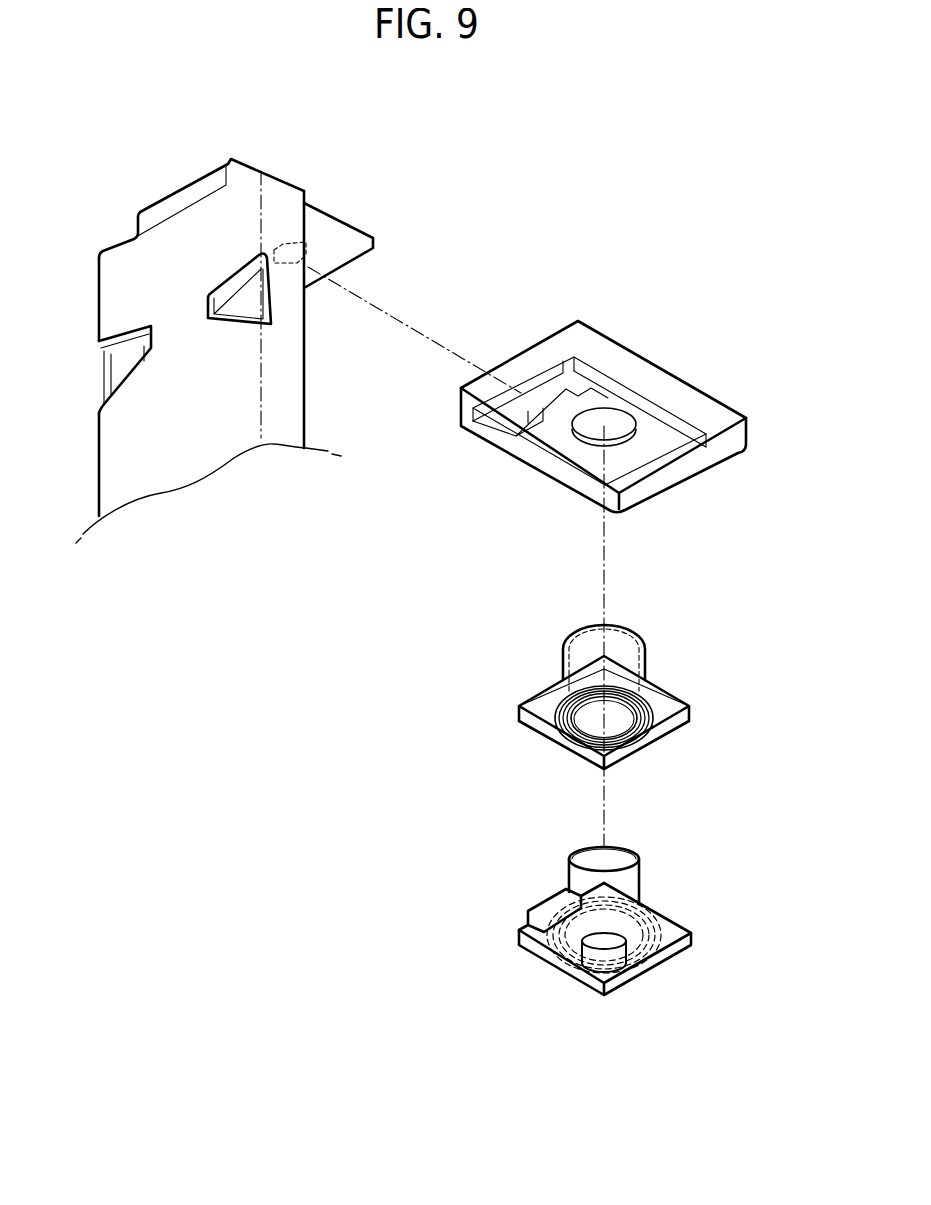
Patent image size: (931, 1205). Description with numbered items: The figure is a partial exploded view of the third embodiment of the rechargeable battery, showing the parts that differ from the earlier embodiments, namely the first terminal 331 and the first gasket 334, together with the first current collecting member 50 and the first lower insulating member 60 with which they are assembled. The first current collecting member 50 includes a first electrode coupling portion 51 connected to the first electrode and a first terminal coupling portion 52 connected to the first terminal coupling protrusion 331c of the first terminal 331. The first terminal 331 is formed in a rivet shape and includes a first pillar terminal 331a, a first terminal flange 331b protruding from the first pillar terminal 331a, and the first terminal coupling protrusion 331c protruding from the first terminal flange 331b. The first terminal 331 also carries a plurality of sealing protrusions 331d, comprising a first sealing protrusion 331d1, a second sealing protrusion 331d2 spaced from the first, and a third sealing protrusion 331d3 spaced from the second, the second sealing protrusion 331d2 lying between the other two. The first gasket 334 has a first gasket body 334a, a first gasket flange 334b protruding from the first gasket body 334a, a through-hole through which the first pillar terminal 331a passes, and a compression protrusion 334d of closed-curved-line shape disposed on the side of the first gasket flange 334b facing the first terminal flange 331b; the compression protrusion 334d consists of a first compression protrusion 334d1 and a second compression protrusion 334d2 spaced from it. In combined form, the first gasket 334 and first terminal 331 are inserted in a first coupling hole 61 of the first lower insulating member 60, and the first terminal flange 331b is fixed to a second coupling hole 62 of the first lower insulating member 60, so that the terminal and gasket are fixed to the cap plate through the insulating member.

The first current collecting member 50 is at (291, 341).
The first electrode coupling portion 51 is at (287, 393).
The first terminal coupling portion 52 is at (330, 213).
The first lower insulating member 60 is at (603, 557).
The first coupling hole 61 is at (610, 418).
The second coupling hole 62 is at (566, 428).
The first gasket 334 is at (536, 697).
The first gasket body 334a is at (565, 650).
The first gasket flange 334b is at (540, 700).
The compression protrusion 334d is at (492, 742).
The first compression protrusion 334d1 is at (573, 740).
The second compression protrusion 334d2 is at (553, 722).
The first terminal 331 is at (563, 926).
The first pillar terminal 331a is at (625, 882).
The first terminal flange 331b is at (658, 952).
The first terminal coupling protrusion 331c is at (603, 957).
The sealing protrusions 331d is at (505, 981).
The first sealing protrusion 331d1 is at (517, 982).
The second sealing protrusion 331d2 is at (577, 946).
The third sealing protrusion 331d3 is at (545, 935).